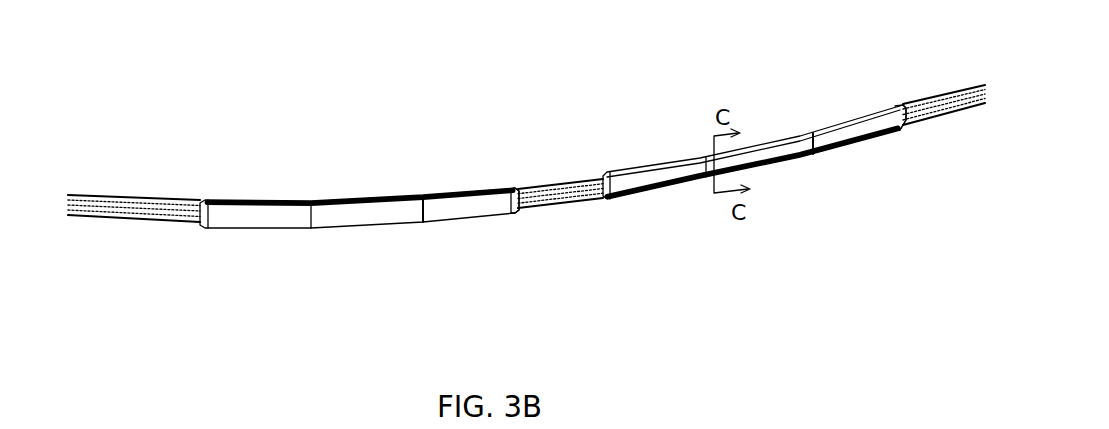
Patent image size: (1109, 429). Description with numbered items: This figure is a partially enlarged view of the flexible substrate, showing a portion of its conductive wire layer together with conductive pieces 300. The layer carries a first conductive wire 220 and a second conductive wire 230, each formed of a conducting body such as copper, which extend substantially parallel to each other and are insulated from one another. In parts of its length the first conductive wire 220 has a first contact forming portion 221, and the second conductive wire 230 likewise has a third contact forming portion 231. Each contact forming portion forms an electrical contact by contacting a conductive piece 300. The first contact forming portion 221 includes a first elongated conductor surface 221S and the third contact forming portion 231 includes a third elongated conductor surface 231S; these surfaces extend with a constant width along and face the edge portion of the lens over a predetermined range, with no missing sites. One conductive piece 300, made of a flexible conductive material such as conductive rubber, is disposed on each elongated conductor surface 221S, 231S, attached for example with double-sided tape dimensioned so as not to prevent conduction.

The first conductive wire 220 is at (962, 88).
The second conductive wire 230 is at (953, 110).
The conductive piece 300 is at (340, 215).
The third elongated conductor surface 231S is at (455, 213).
The third contact forming portion 231 is at (495, 218).
The first elongated conductor surface 221S is at (862, 128).
The first contact forming portion 221 is at (890, 102).